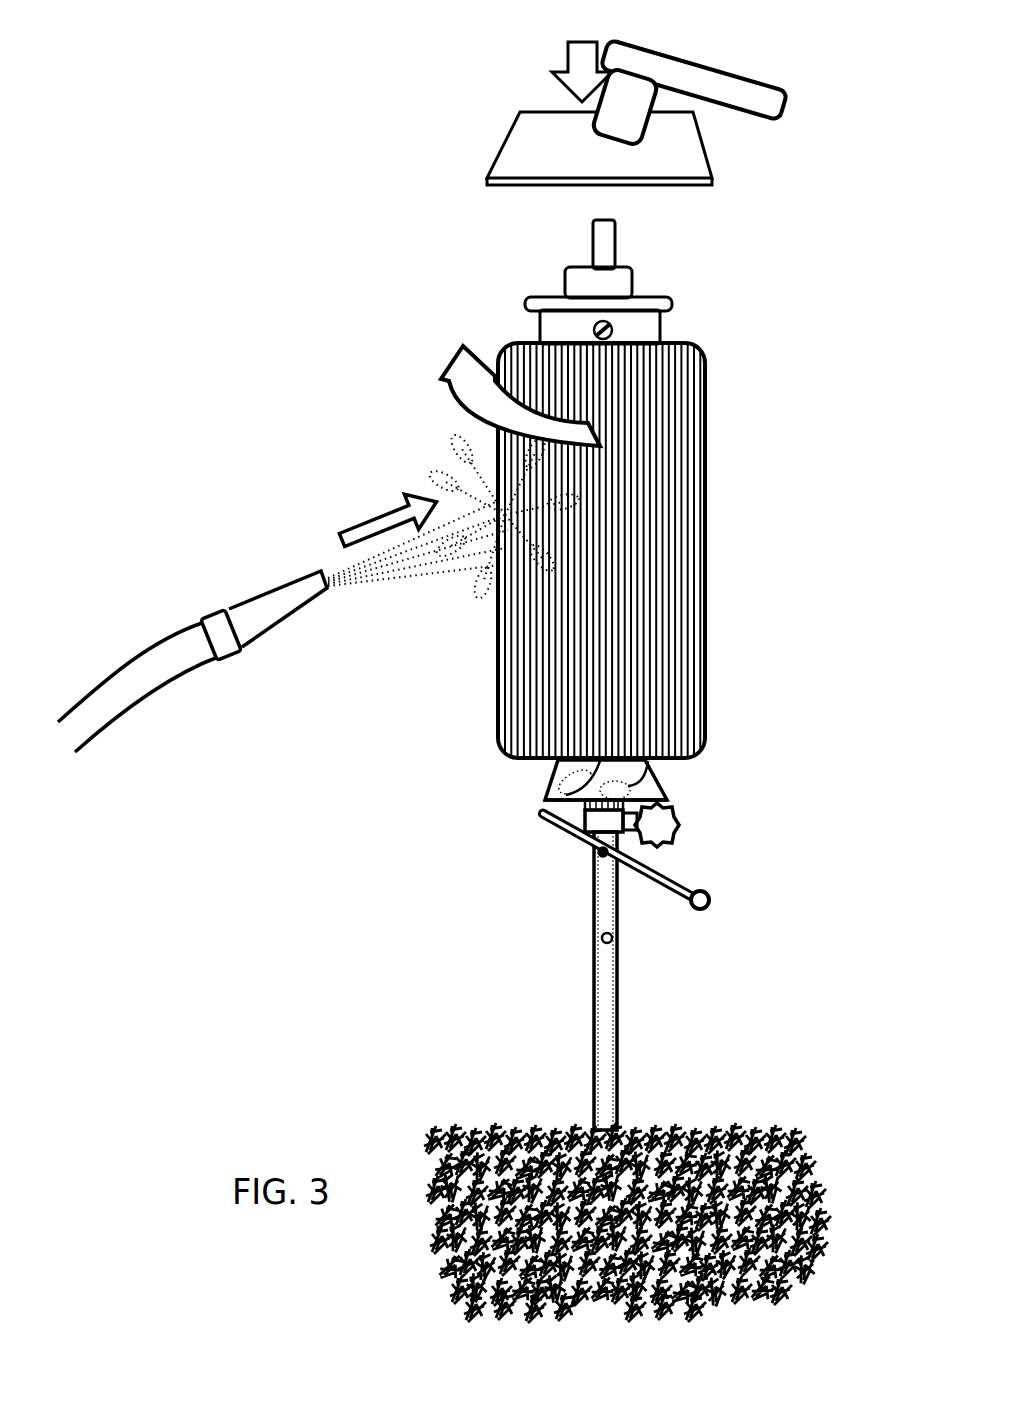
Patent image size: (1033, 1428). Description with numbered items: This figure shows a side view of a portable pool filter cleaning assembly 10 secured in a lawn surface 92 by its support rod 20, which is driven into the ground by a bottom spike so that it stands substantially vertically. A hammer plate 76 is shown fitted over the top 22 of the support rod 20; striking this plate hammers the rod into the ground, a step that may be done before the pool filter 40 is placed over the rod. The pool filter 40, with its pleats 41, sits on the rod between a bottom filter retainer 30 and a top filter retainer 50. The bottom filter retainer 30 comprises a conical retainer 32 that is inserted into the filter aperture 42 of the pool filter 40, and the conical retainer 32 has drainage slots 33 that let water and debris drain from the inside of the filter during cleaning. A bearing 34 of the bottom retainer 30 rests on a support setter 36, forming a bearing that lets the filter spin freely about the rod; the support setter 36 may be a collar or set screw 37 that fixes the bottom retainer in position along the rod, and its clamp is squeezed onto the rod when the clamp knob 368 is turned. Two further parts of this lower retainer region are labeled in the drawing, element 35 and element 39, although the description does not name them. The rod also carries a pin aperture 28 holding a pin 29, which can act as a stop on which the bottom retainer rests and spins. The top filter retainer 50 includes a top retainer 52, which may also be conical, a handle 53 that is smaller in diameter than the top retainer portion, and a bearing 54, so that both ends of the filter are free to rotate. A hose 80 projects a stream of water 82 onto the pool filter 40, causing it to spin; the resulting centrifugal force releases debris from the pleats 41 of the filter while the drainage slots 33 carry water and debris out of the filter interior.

The portable pool filter cleaning assembly 10 is at (538, 253).
The support rod 20 is at (607, 1020).
The top of the support rod 22 is at (602, 228).
The pin aperture 28 is at (601, 915).
The pin 29 is at (687, 908).
The bottom filter retainer 30 is at (597, 764).
The conical retainer 32 is at (555, 773).
The drainage slots 33 is at (670, 788).
The bearing 34 is at (653, 815).
The valve inlet 35 is at (598, 818).
The support setter 36 is at (600, 838).
The set screw 37 is at (540, 815).
The valve outlet 39 is at (625, 832).
The pool filter 40 is at (592, 550).
The pleats 41 is at (622, 573).
The filter aperture 42 is at (672, 762).
The top filter retainer 50 is at (562, 300).
The top retainer 52 is at (642, 298).
The handle 53 is at (578, 278).
The bearing 54 is at (633, 287).
The hammer plate 76 is at (518, 158).
The hose 80 is at (267, 588).
The stream of water 82 is at (335, 555).
The lawn surface 92 is at (501, 1134).
The clamp knob 368 is at (680, 837).